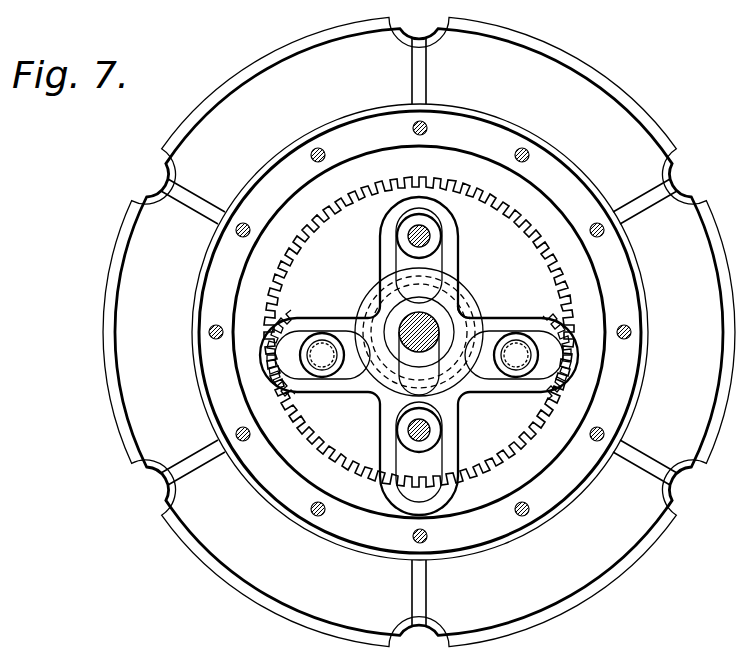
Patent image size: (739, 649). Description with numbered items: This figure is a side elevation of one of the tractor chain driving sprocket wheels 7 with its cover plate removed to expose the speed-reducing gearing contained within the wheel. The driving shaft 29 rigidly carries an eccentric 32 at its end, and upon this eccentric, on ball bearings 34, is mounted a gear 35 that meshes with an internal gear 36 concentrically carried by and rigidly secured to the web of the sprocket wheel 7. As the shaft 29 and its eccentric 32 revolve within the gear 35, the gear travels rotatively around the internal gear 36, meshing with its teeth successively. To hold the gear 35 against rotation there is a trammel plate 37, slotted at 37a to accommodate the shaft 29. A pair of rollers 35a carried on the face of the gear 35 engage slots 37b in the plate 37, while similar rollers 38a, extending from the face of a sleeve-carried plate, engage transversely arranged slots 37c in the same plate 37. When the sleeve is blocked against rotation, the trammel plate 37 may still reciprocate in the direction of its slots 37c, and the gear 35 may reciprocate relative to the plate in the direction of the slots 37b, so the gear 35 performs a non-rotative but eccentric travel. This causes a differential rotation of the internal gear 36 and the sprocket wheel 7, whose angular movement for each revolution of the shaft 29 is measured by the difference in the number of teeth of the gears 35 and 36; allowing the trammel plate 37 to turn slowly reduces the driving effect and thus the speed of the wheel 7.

The driving sprocket wheel 7 is at (630, 137).
The shaft 29 is at (418, 312).
The eccentric 32 is at (468, 318).
The ball bearings 34 is at (462, 412).
The gear 35 is at (338, 266).
The rollers 35a is at (278, 370).
The internal gear 36 is at (463, 190).
The trammel plate 37 is at (458, 308).
The slot 37a is at (412, 375).
The slots 37b is at (285, 354).
The transversely arranged slots 37c is at (402, 270).
The rollers 38a is at (414, 222).